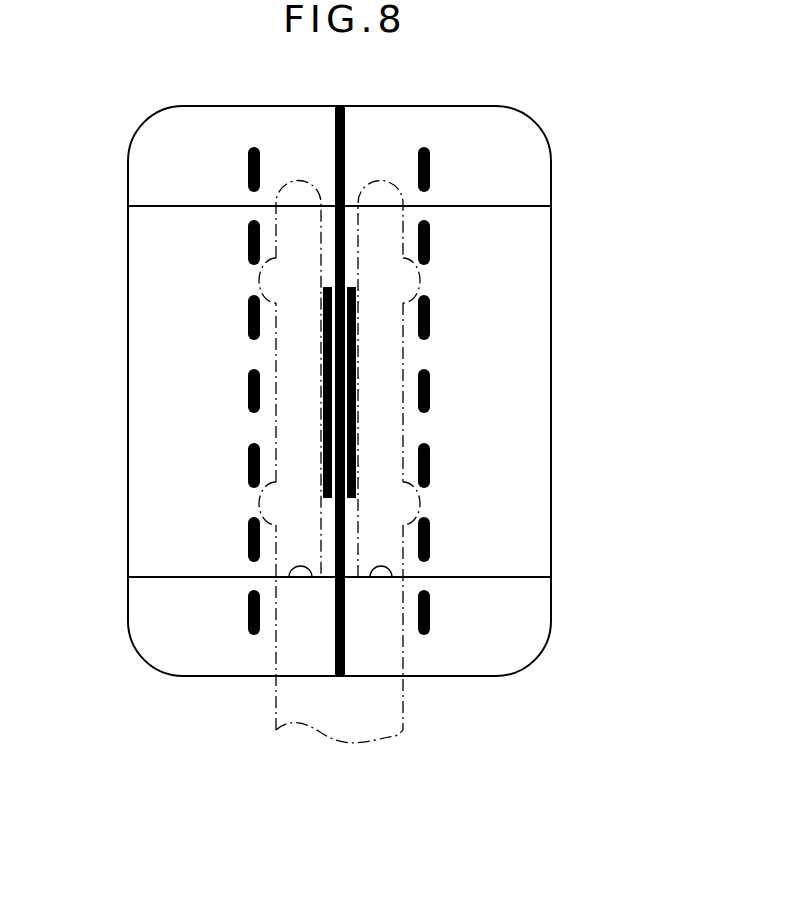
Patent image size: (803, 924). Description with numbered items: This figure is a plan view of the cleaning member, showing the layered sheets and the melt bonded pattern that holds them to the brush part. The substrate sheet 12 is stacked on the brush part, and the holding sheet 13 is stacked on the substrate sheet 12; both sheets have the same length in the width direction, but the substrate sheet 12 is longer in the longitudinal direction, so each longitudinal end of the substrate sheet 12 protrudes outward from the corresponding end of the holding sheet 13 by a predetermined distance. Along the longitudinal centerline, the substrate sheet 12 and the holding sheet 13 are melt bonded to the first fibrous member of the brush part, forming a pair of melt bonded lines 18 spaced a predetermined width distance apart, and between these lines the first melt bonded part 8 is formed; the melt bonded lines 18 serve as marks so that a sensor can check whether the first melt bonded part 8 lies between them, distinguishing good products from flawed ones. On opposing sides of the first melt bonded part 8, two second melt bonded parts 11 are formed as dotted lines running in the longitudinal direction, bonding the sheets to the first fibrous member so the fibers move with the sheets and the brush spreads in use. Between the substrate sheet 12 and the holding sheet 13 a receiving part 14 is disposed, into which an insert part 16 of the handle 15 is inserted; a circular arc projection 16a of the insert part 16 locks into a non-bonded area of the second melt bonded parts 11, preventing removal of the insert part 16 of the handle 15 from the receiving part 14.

The first melt bonded part 8 is at (345, 143).
The second melt bonded parts 11 is at (248, 247).
The substrate sheet 12 is at (525, 183).
The holding sheet 13 is at (530, 558).
The receiving part 14 is at (312, 574).
The handle 15 is at (292, 707).
The insert part 16 is at (290, 414).
The circular arc projection 16a is at (419, 280).
The melt bonded lines 18 is at (323, 435).